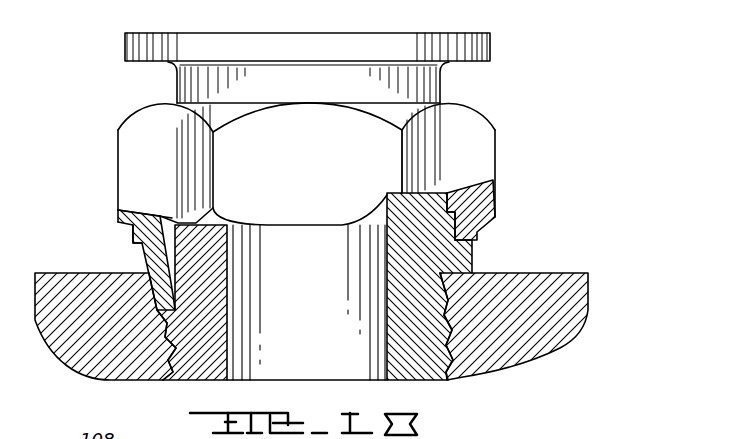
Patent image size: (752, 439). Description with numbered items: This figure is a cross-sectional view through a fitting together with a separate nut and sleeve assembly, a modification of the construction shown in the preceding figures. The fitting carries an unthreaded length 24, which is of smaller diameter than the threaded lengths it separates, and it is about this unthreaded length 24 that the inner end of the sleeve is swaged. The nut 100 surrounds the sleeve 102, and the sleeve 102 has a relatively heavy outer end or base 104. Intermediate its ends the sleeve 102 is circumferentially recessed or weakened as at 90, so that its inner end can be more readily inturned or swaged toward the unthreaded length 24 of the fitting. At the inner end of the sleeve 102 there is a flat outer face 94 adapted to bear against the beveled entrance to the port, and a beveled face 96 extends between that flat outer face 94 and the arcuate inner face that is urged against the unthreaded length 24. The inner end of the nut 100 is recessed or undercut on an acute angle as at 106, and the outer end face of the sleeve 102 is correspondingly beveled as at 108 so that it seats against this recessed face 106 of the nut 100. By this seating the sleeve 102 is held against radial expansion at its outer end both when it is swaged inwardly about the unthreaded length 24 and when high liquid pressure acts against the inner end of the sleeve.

The unthreaded length 24 is at (169, 259).
The circumferential recess 90 is at (473, 250).
The flat outer face 94 is at (483, 287).
The beveled face 96 is at (447, 283).
The nut 100 is at (490, 163).
The sleeve 102 is at (152, 247).
The outer end or base of the sleeve 104 is at (140, 236).
The recessed or undercut face of the nut 106 is at (484, 222).
The beveled outer end face of the sleeve 108 is at (130, 212).